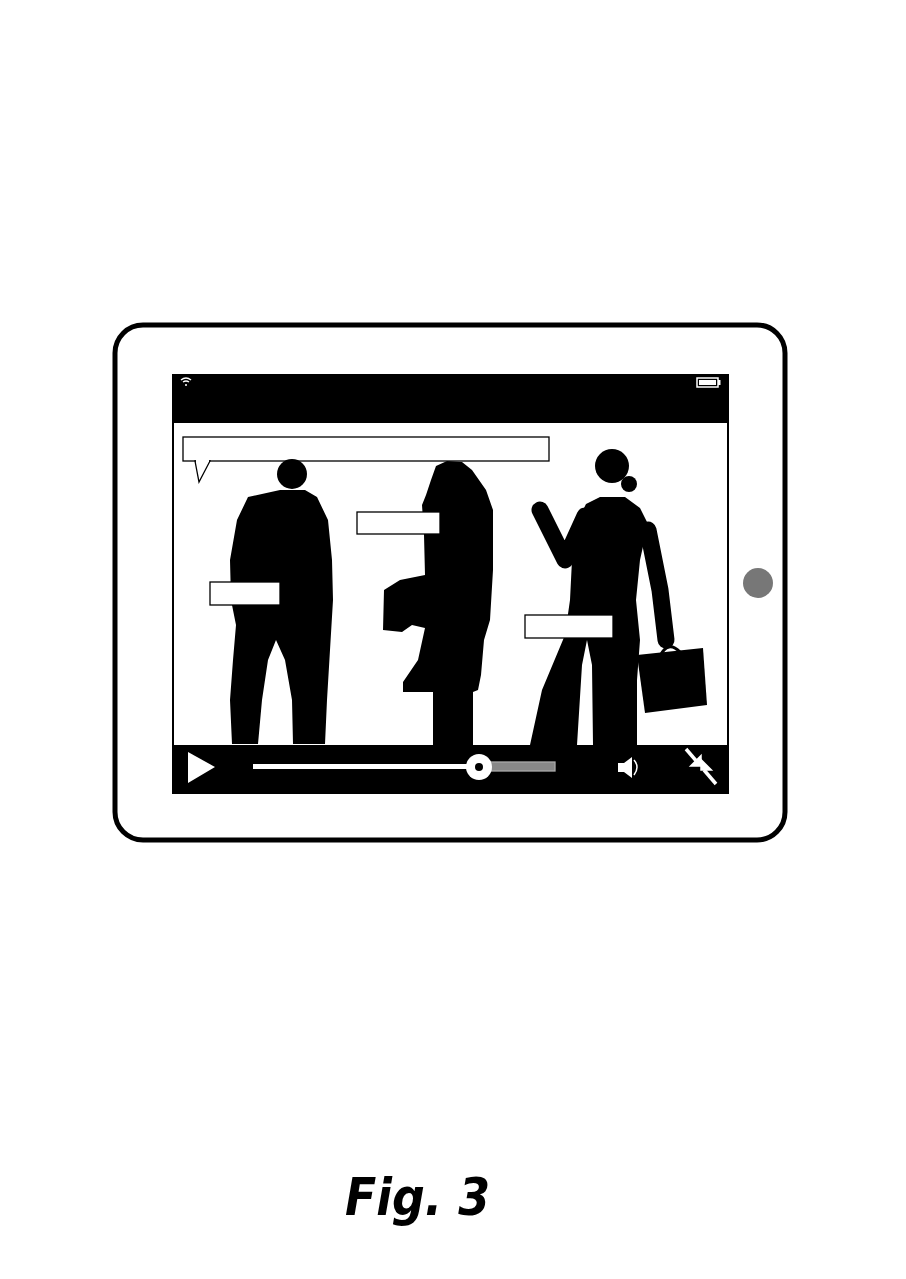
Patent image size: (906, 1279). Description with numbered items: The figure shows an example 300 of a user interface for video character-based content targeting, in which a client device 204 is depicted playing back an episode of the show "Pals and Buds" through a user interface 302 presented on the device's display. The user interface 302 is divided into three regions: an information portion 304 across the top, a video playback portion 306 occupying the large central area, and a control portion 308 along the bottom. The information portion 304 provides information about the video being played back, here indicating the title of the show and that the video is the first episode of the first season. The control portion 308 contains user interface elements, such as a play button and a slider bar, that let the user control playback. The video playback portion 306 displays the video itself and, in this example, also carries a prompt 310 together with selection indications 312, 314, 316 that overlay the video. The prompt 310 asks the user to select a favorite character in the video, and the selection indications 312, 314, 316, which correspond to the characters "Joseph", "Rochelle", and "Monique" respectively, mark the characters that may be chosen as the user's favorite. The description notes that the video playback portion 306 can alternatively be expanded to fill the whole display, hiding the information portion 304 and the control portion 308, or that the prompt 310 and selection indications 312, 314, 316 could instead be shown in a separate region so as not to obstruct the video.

The example of a user interface for video character-based content targeting 300 is at (128, 70).
The client device 204 is at (165, 363).
The user interface 302 is at (255, 375).
The information portion 304 is at (155, 378).
The video playback portion 306 is at (155, 432).
The control portion 308 is at (155, 739).
The prompt 310 is at (436, 440).
The selection indication 312 is at (232, 604).
The selection indication 314 is at (398, 534).
The selection indication 316 is at (542, 638).